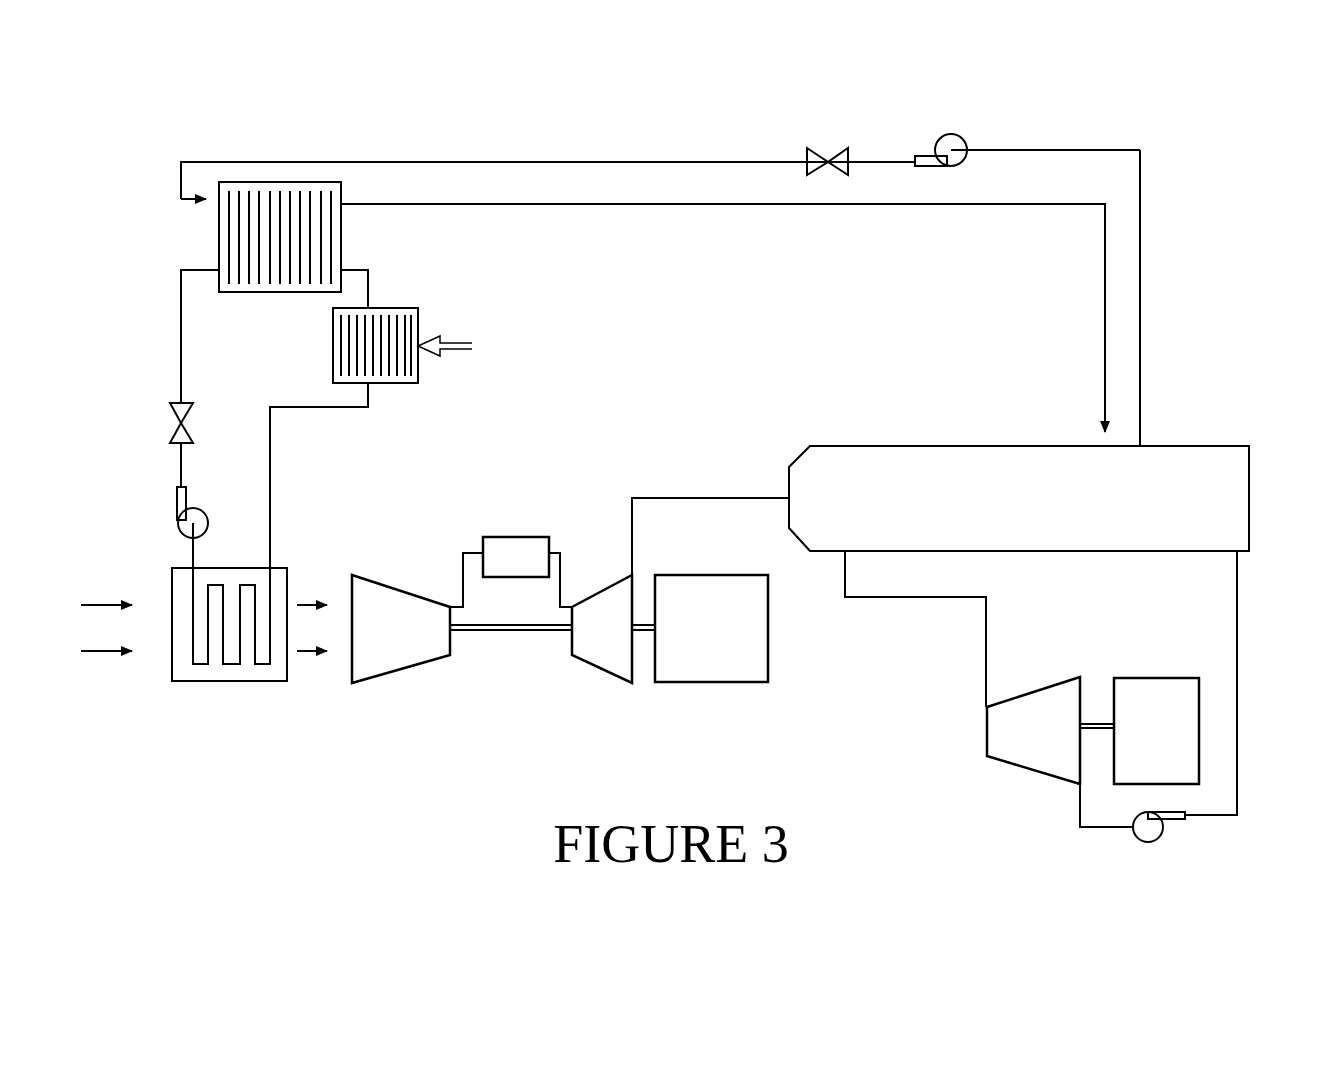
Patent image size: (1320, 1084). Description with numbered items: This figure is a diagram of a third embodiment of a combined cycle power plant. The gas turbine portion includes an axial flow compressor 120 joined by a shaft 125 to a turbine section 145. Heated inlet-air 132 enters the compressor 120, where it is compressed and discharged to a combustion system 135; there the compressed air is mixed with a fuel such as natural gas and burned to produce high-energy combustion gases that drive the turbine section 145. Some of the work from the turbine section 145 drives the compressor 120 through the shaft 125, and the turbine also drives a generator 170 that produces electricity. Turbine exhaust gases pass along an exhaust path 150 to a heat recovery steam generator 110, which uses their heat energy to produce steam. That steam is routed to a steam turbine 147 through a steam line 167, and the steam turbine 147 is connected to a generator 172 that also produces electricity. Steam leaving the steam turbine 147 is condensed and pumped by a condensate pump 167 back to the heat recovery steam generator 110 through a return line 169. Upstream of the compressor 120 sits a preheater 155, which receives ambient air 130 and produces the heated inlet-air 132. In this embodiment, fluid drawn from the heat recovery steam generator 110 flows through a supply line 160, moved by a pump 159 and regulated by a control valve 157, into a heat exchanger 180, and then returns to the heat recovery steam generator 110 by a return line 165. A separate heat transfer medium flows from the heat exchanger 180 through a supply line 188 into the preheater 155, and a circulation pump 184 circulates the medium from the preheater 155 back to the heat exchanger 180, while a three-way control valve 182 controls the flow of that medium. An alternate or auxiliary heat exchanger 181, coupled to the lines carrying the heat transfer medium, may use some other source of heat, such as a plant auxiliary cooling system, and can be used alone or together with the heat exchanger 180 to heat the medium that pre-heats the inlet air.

The heat recovery steam generator 110 is at (1195, 460).
The axial flow compressor 120 is at (395, 600).
The shaft 125 is at (512, 632).
The ambient air 130 is at (102, 611).
The inlet-air 132 is at (312, 610).
The combustion system 135 is at (515, 547).
The turbine section 145 is at (603, 608).
The steam turbine 147 is at (1040, 688).
The exhaust gas line 150 is at (712, 497).
The preheater 155 is at (198, 682).
The control valve 157 is at (828, 150).
The pump 159 is at (948, 134).
The supply line 160 is at (1143, 228).
The return line 165 is at (1103, 278).
The steam line and condensate pump 167 is at (948, 598).
The return line 169 is at (1240, 672).
The generator 170 is at (675, 683).
The generator 172 is at (1145, 678).
The heat exchanger 180 is at (218, 230).
The auxiliary heat exchanger 181 is at (392, 384).
The three-way control valve 182 is at (177, 427).
The circulation pump 184 is at (178, 518).
The supply line 188 is at (273, 468).